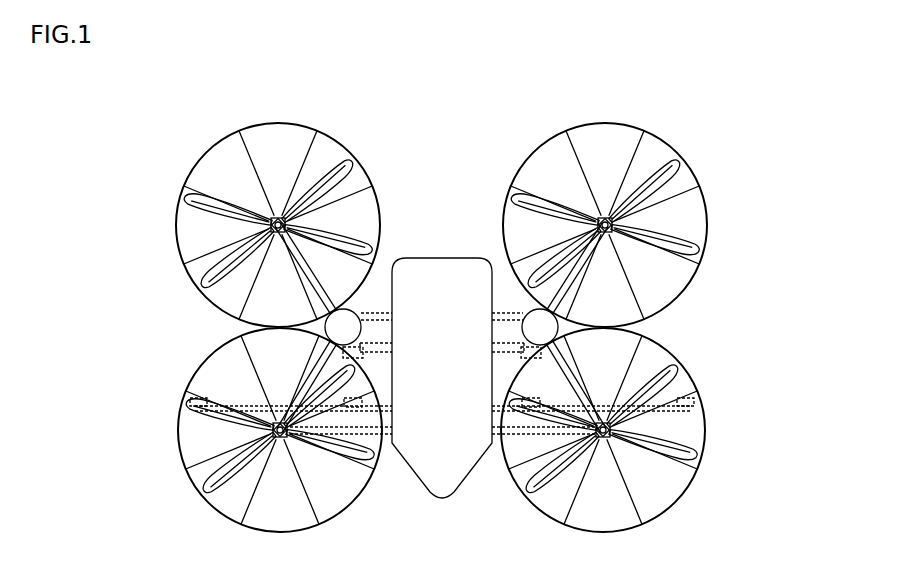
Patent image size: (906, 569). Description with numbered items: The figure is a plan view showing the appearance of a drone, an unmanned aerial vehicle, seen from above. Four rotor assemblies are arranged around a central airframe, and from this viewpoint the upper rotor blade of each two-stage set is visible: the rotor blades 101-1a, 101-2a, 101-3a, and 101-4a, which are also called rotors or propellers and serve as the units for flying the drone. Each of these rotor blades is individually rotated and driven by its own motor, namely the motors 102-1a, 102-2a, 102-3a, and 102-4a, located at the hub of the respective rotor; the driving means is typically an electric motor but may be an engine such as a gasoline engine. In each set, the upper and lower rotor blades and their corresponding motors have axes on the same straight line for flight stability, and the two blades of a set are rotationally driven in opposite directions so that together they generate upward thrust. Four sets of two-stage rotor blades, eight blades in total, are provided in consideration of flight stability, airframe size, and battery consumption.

The rotor blade 101-1a is at (656, 175).
The rotor blade 101-2a is at (672, 442).
The rotor blade 101-3a is at (335, 170).
The rotor blade 101-4a is at (222, 488).
The motor 102-1a is at (604, 216).
The motor 102-2a is at (611, 438).
The motor 102-3a is at (278, 216).
The motor 102-4a is at (288, 440).